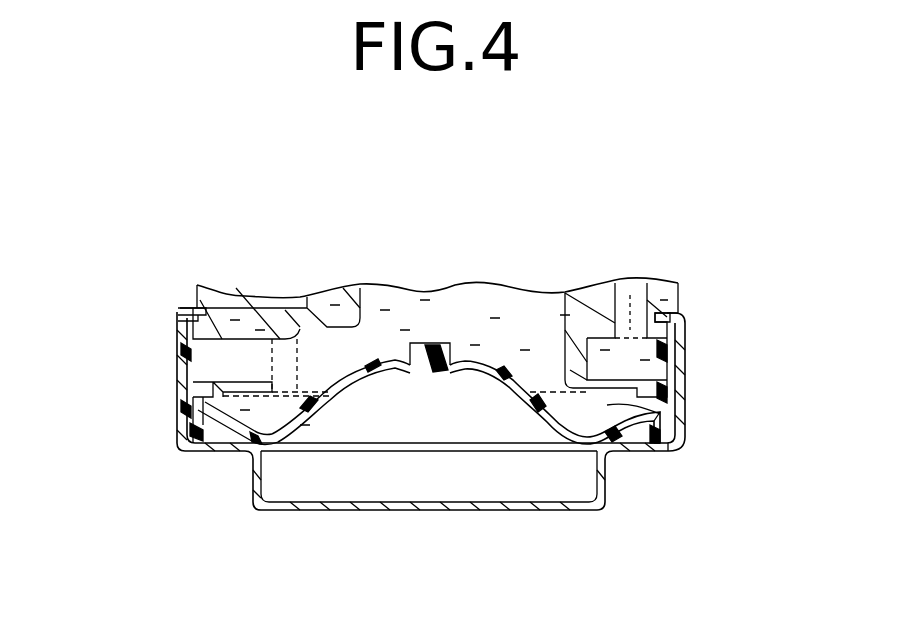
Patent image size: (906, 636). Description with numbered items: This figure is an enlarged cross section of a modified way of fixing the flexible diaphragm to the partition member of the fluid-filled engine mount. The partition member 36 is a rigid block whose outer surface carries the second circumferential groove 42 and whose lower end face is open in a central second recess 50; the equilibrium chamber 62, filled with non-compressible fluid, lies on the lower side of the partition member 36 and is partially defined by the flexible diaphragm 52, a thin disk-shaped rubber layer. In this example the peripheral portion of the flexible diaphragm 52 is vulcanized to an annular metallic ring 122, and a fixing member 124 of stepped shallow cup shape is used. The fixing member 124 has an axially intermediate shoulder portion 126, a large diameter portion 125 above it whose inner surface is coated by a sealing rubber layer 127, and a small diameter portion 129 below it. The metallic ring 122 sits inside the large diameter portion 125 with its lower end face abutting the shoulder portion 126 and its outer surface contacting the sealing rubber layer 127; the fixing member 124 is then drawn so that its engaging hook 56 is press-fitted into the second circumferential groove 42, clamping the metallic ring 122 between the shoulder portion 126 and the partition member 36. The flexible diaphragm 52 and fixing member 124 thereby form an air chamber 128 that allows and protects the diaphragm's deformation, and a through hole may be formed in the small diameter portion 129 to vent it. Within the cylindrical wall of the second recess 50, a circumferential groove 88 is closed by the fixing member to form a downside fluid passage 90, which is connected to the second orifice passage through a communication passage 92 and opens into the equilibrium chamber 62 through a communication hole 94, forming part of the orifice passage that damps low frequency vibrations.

The partition member 36 is at (667, 281).
The second circumferential groove 42 is at (180, 322).
The second recess 50 is at (567, 337).
The flexible diaphragm 52 is at (520, 398).
The engaging hook 56 is at (667, 312).
The equilibrium chamber 62 is at (470, 333).
The circumferential groove 88 is at (633, 367).
The downside fluid passage 90 is at (624, 422).
The communication passage 92 is at (633, 295).
The communication hole 94 is at (283, 338).
The annular metallic ring 122 is at (193, 425).
The fixing member 124 is at (685, 380).
The large diameter portion 125 is at (686, 405).
The shoulder portion 126 is at (663, 453).
The sealing rubber layer 127 is at (670, 362).
The air chamber 128 is at (427, 460).
The small diameter portion 129 is at (256, 493).